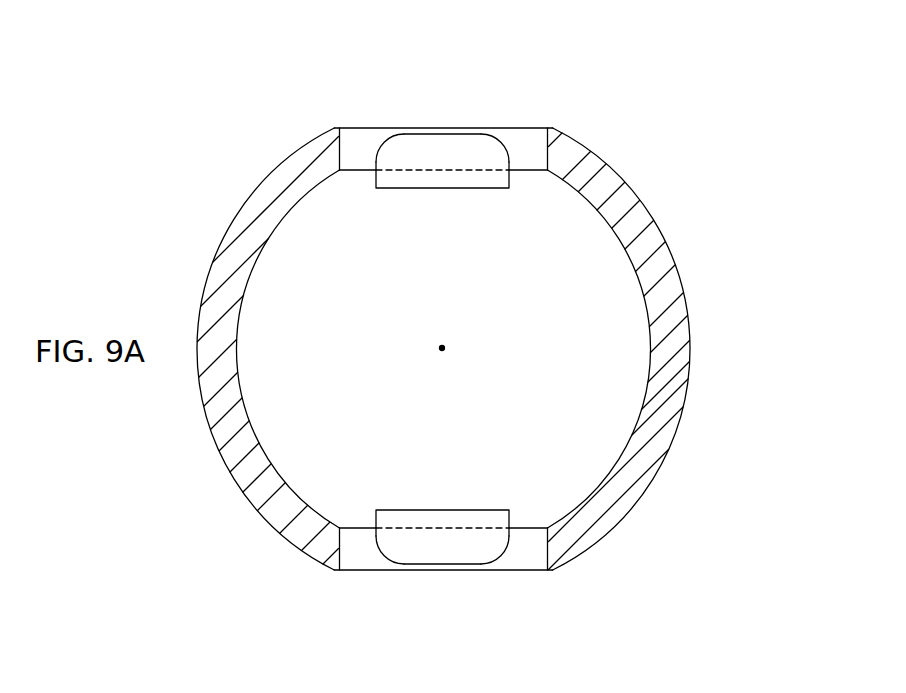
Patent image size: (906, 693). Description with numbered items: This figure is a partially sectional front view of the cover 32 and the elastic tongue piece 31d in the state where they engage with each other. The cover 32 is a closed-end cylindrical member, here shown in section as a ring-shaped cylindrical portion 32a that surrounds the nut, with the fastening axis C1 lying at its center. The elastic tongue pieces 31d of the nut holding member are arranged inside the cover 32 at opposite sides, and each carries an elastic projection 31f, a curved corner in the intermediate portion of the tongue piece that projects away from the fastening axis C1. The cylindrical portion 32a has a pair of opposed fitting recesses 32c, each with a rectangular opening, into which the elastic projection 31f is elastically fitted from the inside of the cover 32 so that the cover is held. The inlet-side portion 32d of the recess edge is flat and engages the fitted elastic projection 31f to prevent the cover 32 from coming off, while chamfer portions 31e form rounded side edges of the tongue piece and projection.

The elastic tongue piece 31d is at (462, 146).
The chamfer portion 31e is at (388, 139).
The elastic projection 31f is at (437, 134).
The cover 32 is at (690, 414).
The cylindrical portion 32a is at (665, 257).
The fitting recess 32c is at (358, 161).
The portion on the side of the inlet 32d is at (348, 142).
The fastening axis C1 is at (447, 348).